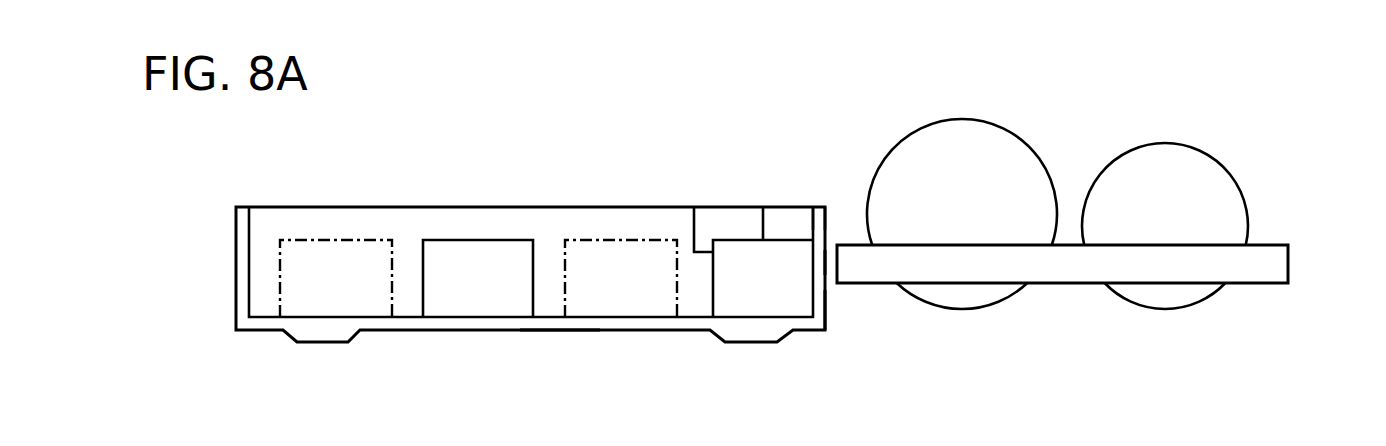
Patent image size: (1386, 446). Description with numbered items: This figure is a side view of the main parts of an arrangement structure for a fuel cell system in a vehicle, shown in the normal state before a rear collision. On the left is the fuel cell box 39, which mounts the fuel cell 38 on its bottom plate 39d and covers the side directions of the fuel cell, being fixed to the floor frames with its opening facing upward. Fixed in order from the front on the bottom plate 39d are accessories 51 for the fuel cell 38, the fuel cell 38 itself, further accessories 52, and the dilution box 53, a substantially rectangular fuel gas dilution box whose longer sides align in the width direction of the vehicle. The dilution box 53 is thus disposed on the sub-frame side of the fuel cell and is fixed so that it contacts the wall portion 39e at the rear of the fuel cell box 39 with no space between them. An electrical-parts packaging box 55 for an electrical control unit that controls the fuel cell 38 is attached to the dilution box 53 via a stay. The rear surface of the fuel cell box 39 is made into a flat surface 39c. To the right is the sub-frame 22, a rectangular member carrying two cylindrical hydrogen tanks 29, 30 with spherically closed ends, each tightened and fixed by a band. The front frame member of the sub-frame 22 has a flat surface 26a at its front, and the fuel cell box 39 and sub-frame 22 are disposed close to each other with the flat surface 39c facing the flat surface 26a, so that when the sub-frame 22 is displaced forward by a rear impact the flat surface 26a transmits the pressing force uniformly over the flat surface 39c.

The sub-frame 22 is at (1312, 262).
The flat surface 26a is at (831, 262).
The hydrogen tank 29 is at (965, 119).
The hydrogen tank 30 is at (1173, 143).
The fuel cell 38 is at (474, 240).
The fuel cell box 39 is at (552, 196).
The flat surface 39c is at (826, 298).
The bottom plate 39d is at (556, 330).
The wall portion 39e is at (818, 215).
The accessories 51 is at (326, 240).
The accessories 52 is at (623, 240).
The dilution box 53 is at (758, 300).
The electrical-parts packaging box 55 is at (733, 220).